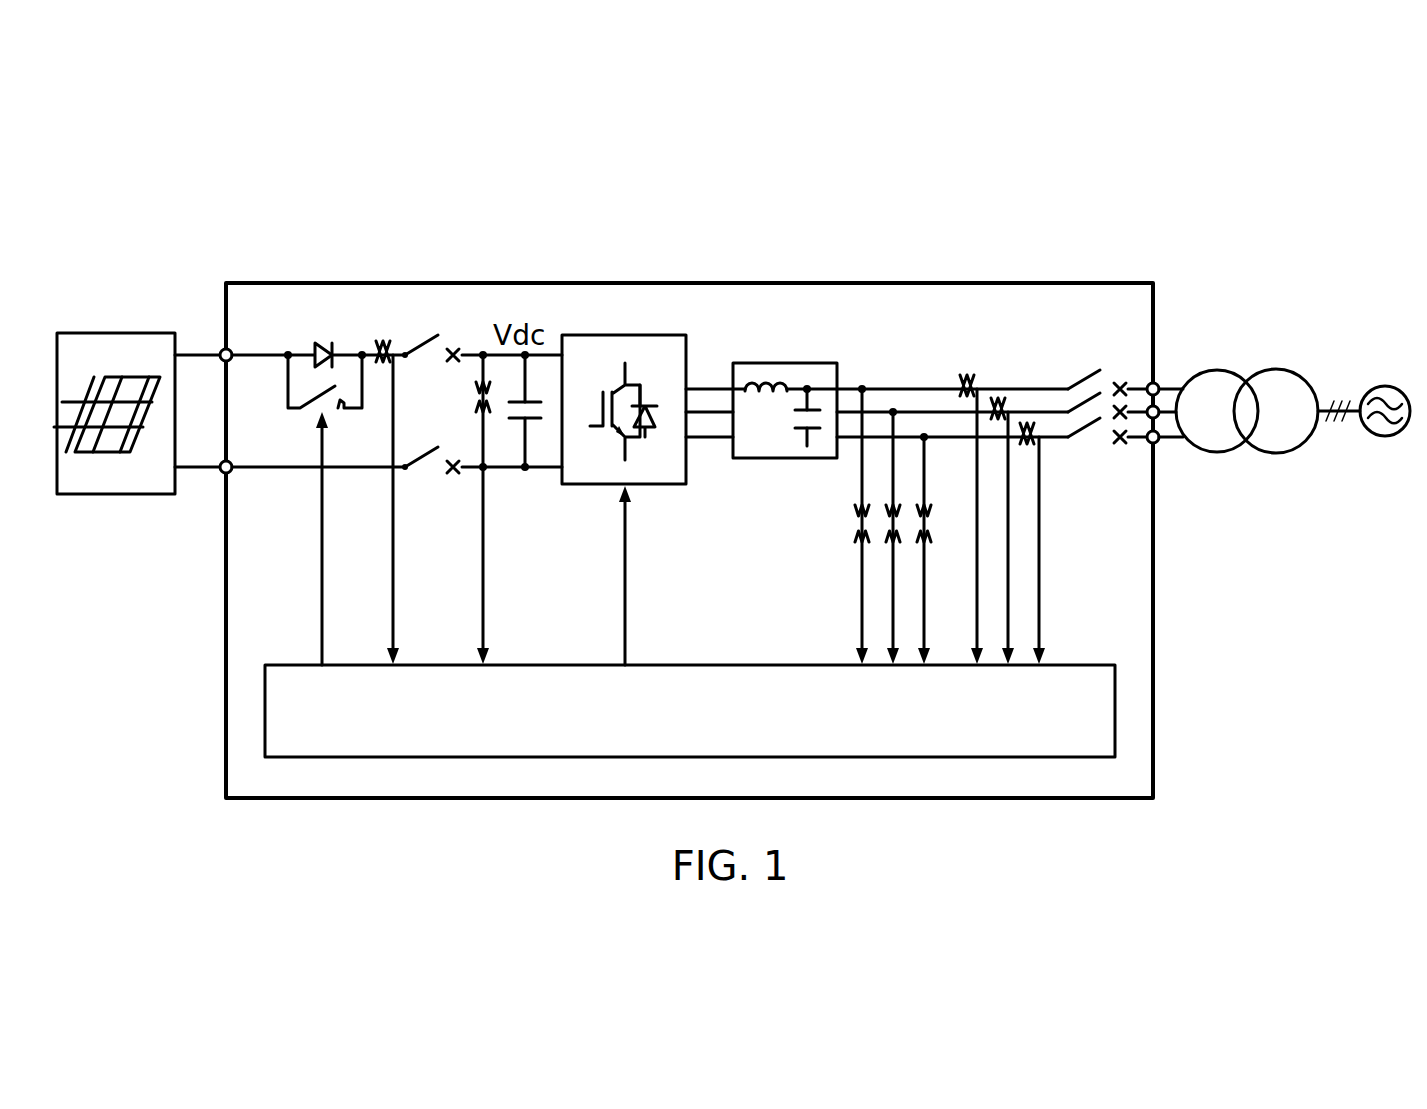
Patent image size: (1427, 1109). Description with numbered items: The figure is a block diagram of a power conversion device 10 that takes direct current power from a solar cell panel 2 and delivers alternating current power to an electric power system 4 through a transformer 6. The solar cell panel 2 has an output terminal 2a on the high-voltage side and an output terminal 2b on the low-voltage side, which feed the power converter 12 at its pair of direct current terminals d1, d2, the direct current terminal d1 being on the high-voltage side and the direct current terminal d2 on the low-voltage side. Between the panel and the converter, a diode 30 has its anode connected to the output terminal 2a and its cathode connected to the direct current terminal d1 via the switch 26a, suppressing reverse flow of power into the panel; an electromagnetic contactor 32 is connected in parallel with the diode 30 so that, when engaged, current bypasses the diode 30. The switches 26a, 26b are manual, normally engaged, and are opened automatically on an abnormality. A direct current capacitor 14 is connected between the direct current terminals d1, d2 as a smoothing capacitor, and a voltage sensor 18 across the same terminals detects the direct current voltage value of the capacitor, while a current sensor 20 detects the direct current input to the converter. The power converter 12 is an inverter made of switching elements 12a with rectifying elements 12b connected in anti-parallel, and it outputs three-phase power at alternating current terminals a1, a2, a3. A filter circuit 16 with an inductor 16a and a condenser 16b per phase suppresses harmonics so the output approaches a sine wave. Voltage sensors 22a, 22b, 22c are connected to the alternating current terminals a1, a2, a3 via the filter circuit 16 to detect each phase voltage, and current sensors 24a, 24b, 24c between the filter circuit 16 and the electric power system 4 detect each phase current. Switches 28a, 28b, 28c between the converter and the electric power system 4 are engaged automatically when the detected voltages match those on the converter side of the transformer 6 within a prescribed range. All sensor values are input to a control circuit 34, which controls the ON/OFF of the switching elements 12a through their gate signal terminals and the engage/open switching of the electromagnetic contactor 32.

The solar cell panel 2 is at (115, 333).
The output terminal on the high-voltage side 2a is at (180, 353).
The output terminal on the low-voltage side 2b is at (180, 470).
The electric power system 4 is at (1385, 386).
The transformer 6 is at (1276, 369).
The power conversion device 10 is at (1100, 281).
The power converter 12 is at (628, 414).
The switching element 12a is at (606, 388).
The rectifying element 12b is at (650, 402).
The direct current capacitor 14 is at (510, 422).
The filter circuit 16 is at (793, 311).
The inductor 16a is at (755, 382).
The condenser 16b is at (822, 405).
The voltage sensor 18 is at (478, 380).
The current sensor 20 is at (386, 341).
The voltage sensor 22a is at (855, 522).
The voltage sensor 22b is at (888, 542).
The voltage sensor 22c is at (920, 544).
The current sensor 24a is at (965, 375).
The current sensor 24b is at (1000, 398).
The current sensor 24c is at (1030, 423).
The switch 26a is at (428, 338).
The switch 26b is at (432, 470).
The switch 28a is at (1084, 374).
The switch 28b is at (1073, 440).
The switch 28c is at (1095, 450).
The diode 30 is at (328, 343).
The electromagnetic contactor 32 is at (312, 430).
The control circuit 34 is at (1115, 703).
The alternating current terminal a1 is at (690, 387).
The alternating current terminal a2 is at (690, 414).
The alternating current terminal a3 is at (690, 439).
The direct current terminal d1 is at (546, 353).
The direct current terminal d2 is at (555, 470).